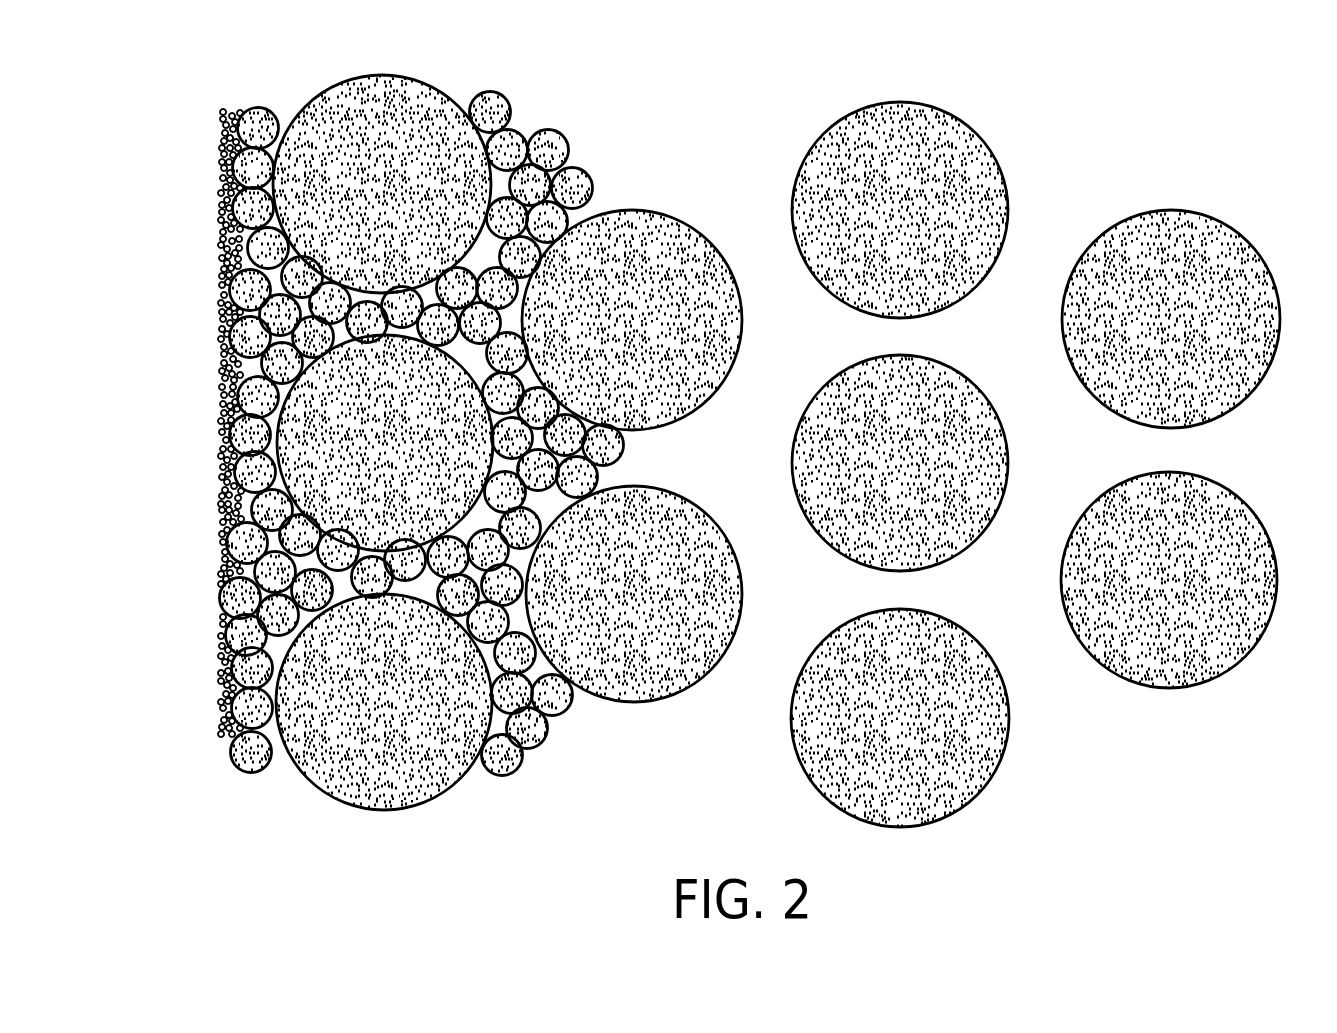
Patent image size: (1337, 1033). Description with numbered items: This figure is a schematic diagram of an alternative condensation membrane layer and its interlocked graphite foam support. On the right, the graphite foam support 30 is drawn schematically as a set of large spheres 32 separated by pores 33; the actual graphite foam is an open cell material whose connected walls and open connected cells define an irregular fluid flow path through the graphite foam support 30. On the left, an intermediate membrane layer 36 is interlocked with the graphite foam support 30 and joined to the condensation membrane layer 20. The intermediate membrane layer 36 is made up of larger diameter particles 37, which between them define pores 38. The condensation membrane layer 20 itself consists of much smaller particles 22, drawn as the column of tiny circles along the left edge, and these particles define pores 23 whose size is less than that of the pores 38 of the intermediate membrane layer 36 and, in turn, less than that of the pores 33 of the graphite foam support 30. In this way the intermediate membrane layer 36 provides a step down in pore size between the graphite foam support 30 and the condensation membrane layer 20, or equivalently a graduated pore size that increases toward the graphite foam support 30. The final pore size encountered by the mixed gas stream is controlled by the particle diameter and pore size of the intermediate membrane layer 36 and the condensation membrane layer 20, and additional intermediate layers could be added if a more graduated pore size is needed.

The condensation membrane layer 20 is at (222, 110).
The particles 22 is at (210, 600).
The pores 23 is at (232, 132).
The graphite foam support 30 is at (791, 136).
The spheres 32 is at (944, 168).
The pores 33 is at (1185, 450).
The intermediate membrane layer 36 is at (265, 90).
The particles 37 is at (248, 760).
The pores 38 is at (255, 363).